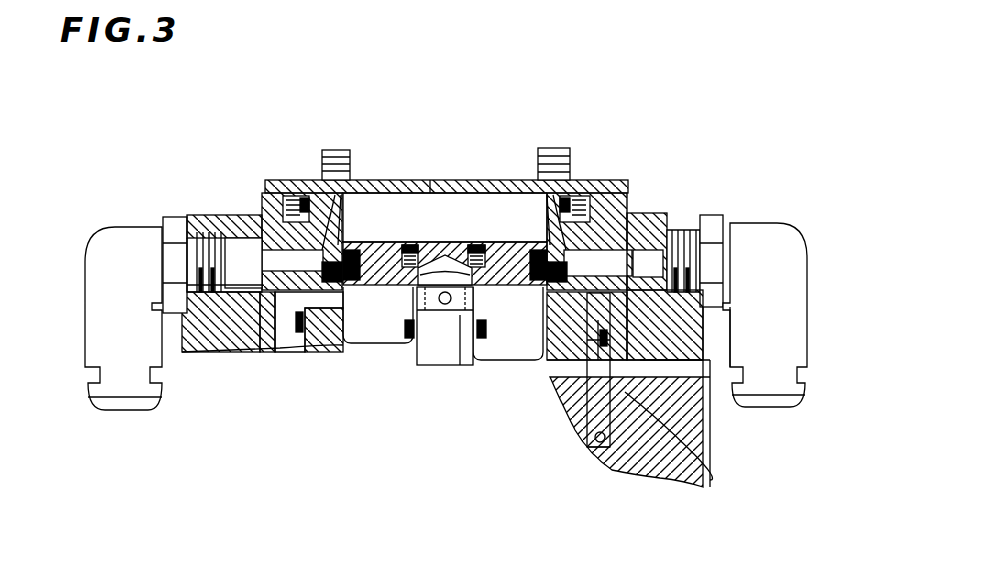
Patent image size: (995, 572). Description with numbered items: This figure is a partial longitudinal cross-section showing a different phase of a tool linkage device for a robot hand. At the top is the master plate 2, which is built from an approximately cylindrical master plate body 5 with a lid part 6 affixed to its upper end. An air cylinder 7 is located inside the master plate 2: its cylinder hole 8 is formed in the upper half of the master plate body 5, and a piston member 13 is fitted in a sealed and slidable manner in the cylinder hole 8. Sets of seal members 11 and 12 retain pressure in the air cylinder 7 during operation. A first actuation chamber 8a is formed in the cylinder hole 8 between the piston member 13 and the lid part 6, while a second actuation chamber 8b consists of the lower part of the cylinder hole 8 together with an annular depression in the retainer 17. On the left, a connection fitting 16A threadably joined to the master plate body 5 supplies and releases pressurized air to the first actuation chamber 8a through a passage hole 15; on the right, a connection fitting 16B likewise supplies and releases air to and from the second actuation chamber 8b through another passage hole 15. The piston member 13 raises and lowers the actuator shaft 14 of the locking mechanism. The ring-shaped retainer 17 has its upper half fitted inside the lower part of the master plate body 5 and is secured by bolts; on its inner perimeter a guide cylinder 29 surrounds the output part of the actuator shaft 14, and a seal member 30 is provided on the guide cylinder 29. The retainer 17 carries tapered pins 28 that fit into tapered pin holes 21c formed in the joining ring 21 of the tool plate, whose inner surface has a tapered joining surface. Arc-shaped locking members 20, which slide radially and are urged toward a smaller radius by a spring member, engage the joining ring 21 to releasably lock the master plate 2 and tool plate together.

The master plate 2 is at (245, 183).
The master plate body 5 is at (222, 215).
The lid part 6 is at (468, 183).
The air cylinder 7 is at (430, 185).
The cylinder hole 8 is at (540, 207).
The first actuation chamber 8a is at (517, 232).
The second actuation chamber 8b is at (513, 347).
The seal member 11 is at (582, 185).
The seal member 12 is at (323, 289).
The piston member 13 is at (384, 252).
The actuator shaft 14 is at (440, 347).
The passage hole 15 is at (345, 212).
The connection fitting 16A is at (125, 240).
The connection fitting 16B is at (753, 253).
The retainer 17 is at (647, 262).
The arc-shaped locking member 20 is at (712, 487).
The joining ring 21 is at (703, 450).
The tapered pin hole 21c is at (595, 453).
The tapered pin 28 is at (703, 367).
The guide cylinder 29 is at (398, 328).
The seal member 30 is at (480, 333).